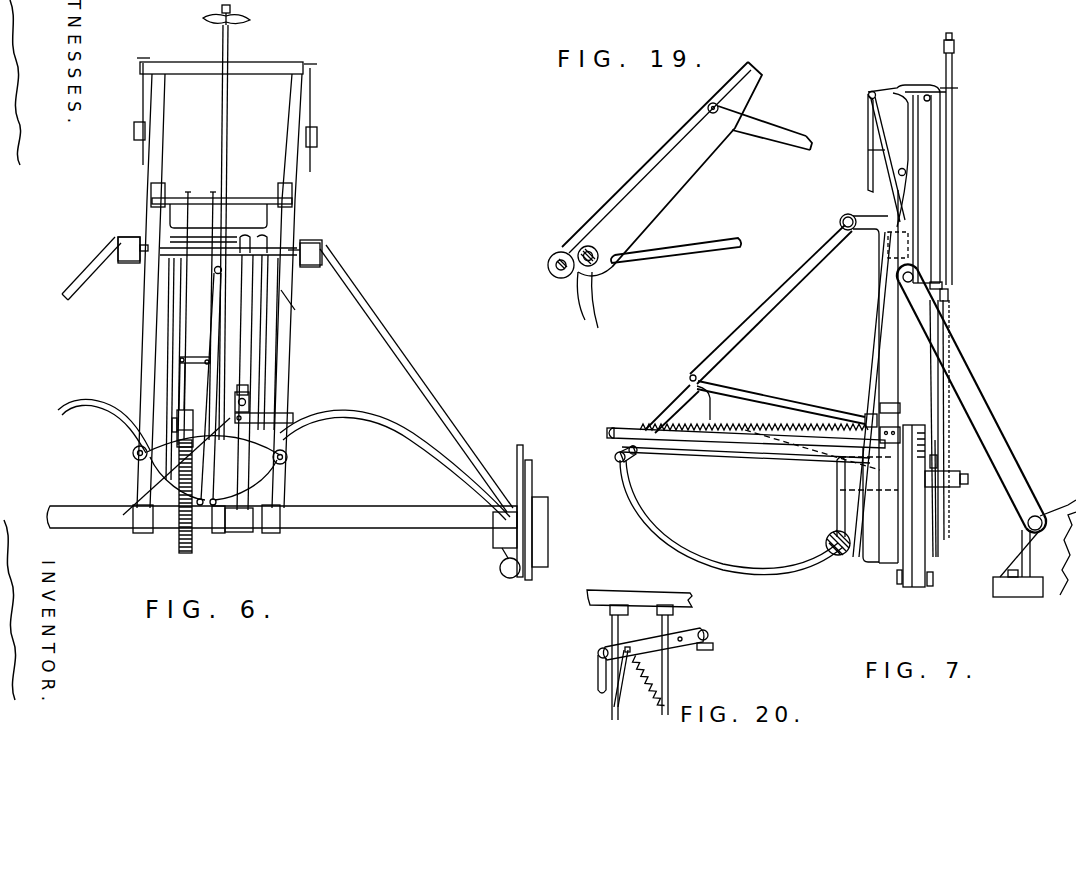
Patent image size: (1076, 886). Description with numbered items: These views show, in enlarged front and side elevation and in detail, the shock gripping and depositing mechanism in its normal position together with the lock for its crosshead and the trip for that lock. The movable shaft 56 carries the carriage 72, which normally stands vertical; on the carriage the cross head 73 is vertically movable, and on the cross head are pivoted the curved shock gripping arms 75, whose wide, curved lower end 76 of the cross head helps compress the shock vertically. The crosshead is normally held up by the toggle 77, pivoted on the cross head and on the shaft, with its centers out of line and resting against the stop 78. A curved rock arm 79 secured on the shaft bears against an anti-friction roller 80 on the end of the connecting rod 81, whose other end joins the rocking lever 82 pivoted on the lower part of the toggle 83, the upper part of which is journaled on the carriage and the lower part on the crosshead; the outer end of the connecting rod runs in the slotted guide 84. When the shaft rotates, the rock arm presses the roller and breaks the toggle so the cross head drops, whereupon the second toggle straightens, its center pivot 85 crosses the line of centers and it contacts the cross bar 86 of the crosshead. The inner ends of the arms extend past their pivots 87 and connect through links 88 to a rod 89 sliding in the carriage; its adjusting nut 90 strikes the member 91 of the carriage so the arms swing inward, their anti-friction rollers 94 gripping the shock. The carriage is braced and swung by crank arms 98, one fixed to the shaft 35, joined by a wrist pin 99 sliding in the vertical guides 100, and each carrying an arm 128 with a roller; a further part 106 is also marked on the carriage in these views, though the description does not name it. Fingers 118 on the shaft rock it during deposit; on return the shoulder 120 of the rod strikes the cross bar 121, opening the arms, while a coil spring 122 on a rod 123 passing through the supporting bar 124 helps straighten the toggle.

In FIG. 7, the shaft 35 is at (1030, 525).
In FIG. 6, the movable shaft 56 is at (413, 538).
In FIG. 7, the movable shaft 56 is at (840, 552).
In FIG. 6, the carriage 72 is at (283, 235).
In FIG. 7, the carriage 72 is at (890, 560).
In FIG. 6, the cross head 73 is at (265, 345).
In FIG. 6, the shock gripping arms 75 is at (80, 408).
In FIG. 7, the shock gripping arms 75 is at (930, 563).
In FIG. 6, the lower end of the cross head 76 is at (257, 460).
In FIG. 20, the lower end of the cross head 76 is at (600, 592).
In FIG. 6, the toggle 77 is at (278, 357).
In FIG. 7, the toggle 77 is at (873, 352).
In FIG. 20, the toggle 77 is at (712, 645).
In FIG. 6, the stop 78 is at (250, 388).
In FIG. 7, the stop 78 is at (880, 405).
In FIG. 6, the curved rock arm 79 is at (187, 550).
In FIG. 19, the curved rock arm 79 is at (578, 305).
In FIG. 7, the curved rock arm 79 is at (667, 530).
In FIG. 6, the anti-friction roller 80 is at (188, 393).
In FIG. 19, the anti-friction roller 80 is at (588, 247).
In FIG. 6, the connecting rod 81 is at (178, 422).
In FIG. 19, the connecting rod 81 is at (722, 238).
In FIG. 7, the connecting rod 81 is at (692, 448).
In FIG. 20, the connecting rod 81 is at (597, 676).
In FIG. 6, the rocking lever 82 is at (232, 430).
In FIG. 20, the rocking lever 82 is at (610, 705).
In FIG. 6, the toggle 83 is at (180, 342).
In FIG. 19, the toggle 83 is at (722, 85).
In FIG. 7, the toggle 83 is at (743, 322).
In FIG. 20, the toggle 83 is at (613, 713).
In FIG. 19, the slotted guide 84 is at (672, 172).
In FIG. 7, the slotted guide 84 is at (668, 410).
In FIG. 19, the center pivot 85 is at (706, 108).
In FIG. 7, the center pivot 85 is at (693, 377).
In FIG. 6, the cross bar 86 is at (172, 222).
In FIG. 7, the cross bar 86 is at (888, 257).
In FIG. 6, the pivots 87 is at (138, 457).
In FIG. 7, the pivots 87 is at (958, 475).
In FIG. 6, the links 88 is at (220, 490).
In FIG. 7, the links 88 is at (943, 528).
In FIG. 6, the rod 89 is at (232, 128).
In FIG. 7, the rod 89 is at (950, 217).
In FIG. 6, the adjusting nut 90 is at (240, 18).
In FIG. 7, the adjusting nut 90 is at (957, 45).
In FIG. 6, the member of the carriage 91 is at (283, 68).
In FIG. 7, the member of the carriage 91 is at (950, 92).
In FIG. 6, the anti-friction rollers 94 is at (503, 572).
In FIG. 7, the anti-friction rollers 94 is at (932, 590).
In FIG. 6, the crank arms 98 is at (427, 383).
In FIG. 7, the crank arms 98 is at (1000, 415).
In FIG. 6, the wrist pin 99 is at (302, 250).
In FIG. 7, the wrist pin 99 is at (900, 280).
In FIG. 7, the vertical guides 100 is at (920, 180).
In FIG. 7, the bracket 106 is at (928, 90).
In FIG. 6, the fingers 118 is at (518, 447).
In FIG. 7, the fingers 118 is at (837, 478).
In FIG. 6, the shoulder 120 is at (200, 262).
In FIG. 7, the shoulder 120 is at (948, 293).
In FIG. 6, the cross bar 121 is at (290, 300).
In FIG. 7, the cross bar 121 is at (945, 285).
In FIG. 7, the coil spring 122 is at (723, 420).
In FIG. 7, the rod 123 is at (612, 432).
In FIG. 7, the supporting bar 124 is at (618, 458).
In FIG. 6, the arm 128 is at (532, 488).
In FIG. 7, the arm 128 is at (1043, 507).